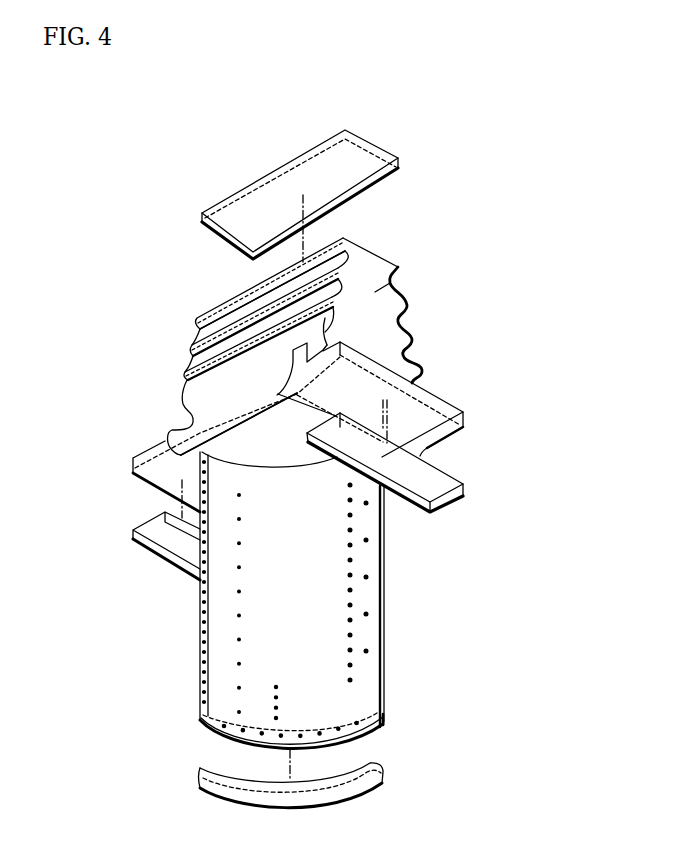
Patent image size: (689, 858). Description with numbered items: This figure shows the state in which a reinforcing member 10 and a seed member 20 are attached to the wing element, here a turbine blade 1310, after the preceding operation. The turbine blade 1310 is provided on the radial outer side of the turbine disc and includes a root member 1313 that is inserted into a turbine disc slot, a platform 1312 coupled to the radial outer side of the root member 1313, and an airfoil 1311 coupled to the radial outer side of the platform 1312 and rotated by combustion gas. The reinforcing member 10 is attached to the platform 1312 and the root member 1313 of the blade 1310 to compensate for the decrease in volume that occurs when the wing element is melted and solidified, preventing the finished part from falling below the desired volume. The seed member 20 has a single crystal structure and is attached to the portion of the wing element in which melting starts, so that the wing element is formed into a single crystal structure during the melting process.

The reinforcing member 10 is at (369, 142).
The seed member 20 is at (362, 786).
The turbine blade 1310 is at (130, 322).
The airfoil 1311 is at (385, 589).
The platform 1312 is at (427, 396).
The root member 1313 is at (392, 283).